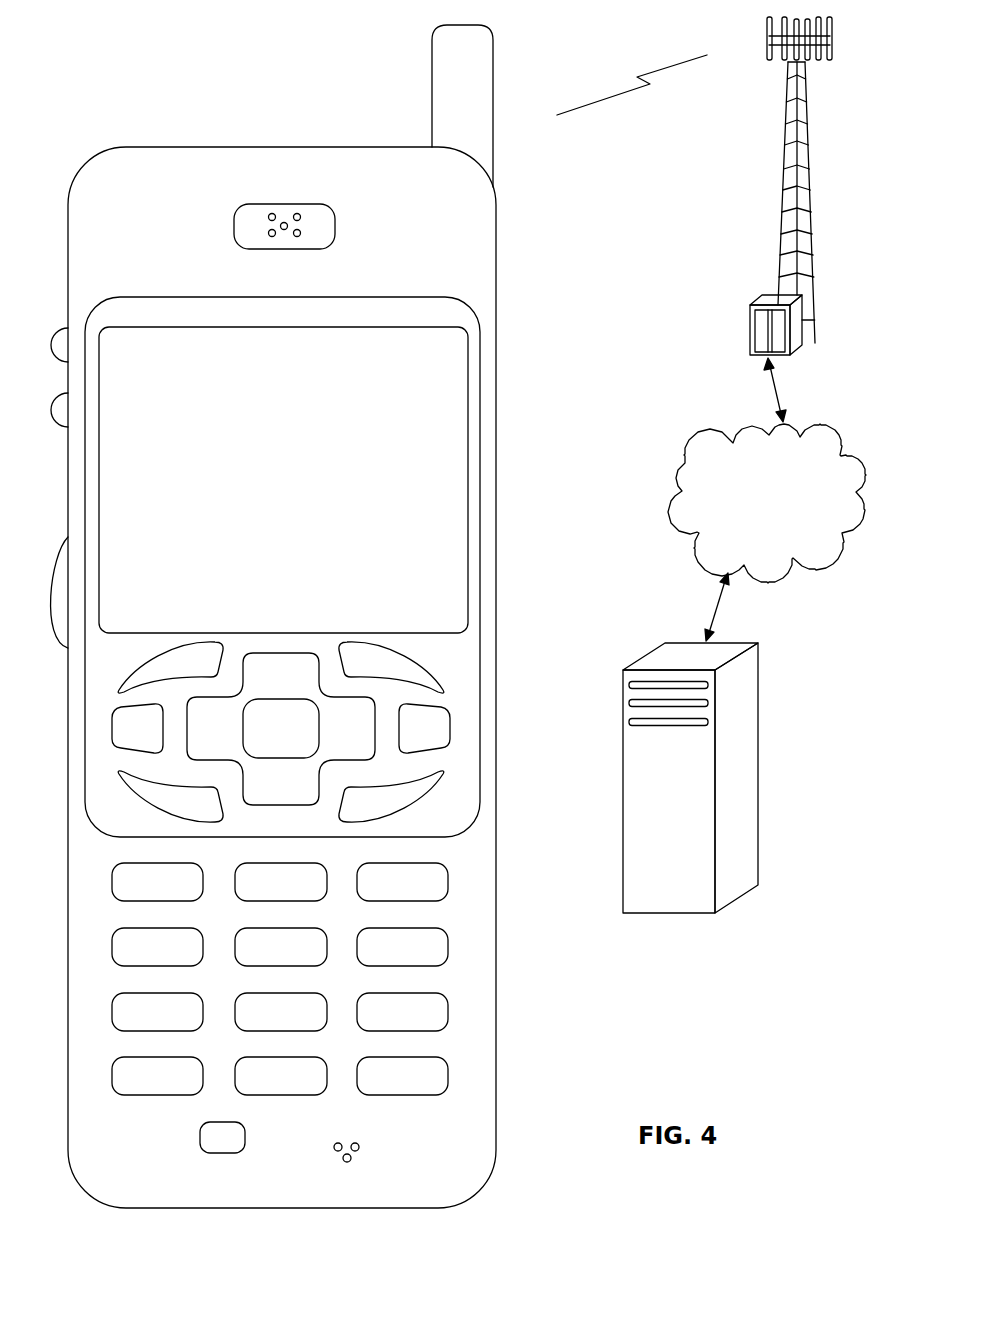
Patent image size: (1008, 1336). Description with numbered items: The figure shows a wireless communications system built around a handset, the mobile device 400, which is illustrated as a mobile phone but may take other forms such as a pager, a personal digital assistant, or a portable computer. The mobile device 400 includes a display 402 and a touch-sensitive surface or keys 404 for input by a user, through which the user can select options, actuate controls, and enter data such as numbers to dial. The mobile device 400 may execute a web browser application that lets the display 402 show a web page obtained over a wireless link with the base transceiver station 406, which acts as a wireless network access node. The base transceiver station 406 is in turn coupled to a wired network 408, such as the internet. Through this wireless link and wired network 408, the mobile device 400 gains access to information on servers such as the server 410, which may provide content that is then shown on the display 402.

The mobile device 400 is at (262, 1207).
The display 402 is at (469, 342).
The keys 404 is at (507, 1103).
The base transceiver station 406 is at (780, 200).
The wired network 408 is at (694, 551).
The server 410 is at (672, 913).